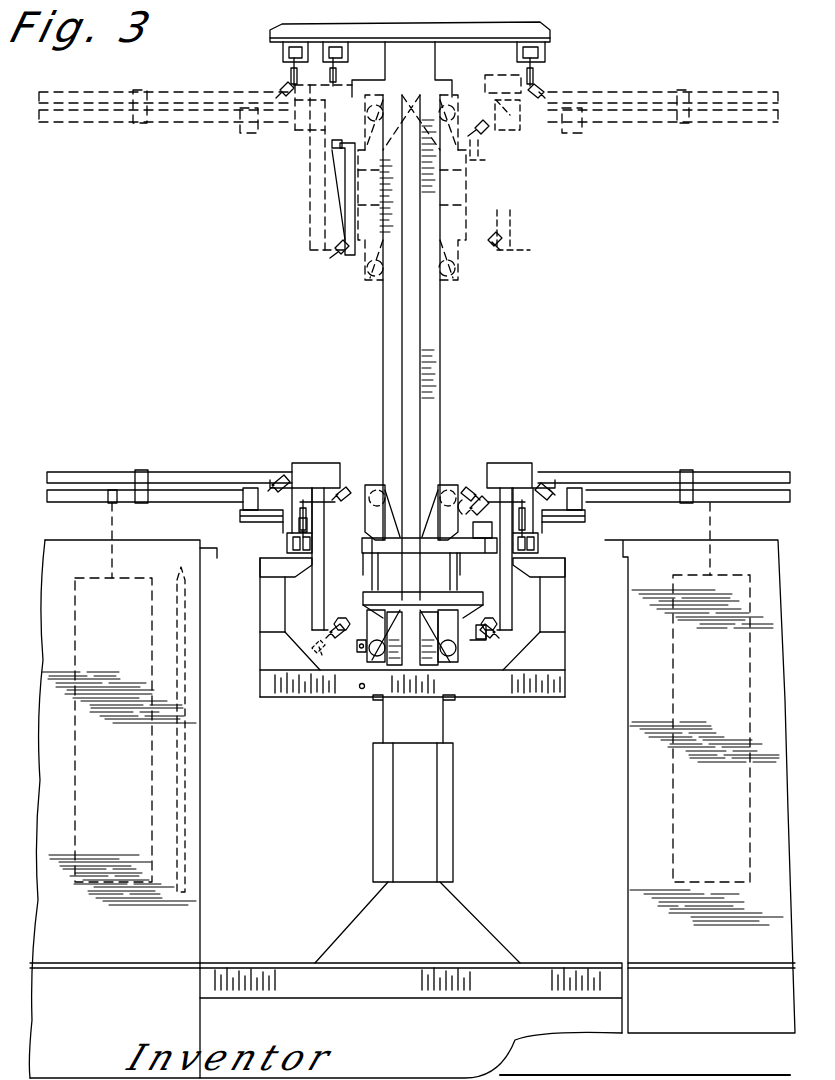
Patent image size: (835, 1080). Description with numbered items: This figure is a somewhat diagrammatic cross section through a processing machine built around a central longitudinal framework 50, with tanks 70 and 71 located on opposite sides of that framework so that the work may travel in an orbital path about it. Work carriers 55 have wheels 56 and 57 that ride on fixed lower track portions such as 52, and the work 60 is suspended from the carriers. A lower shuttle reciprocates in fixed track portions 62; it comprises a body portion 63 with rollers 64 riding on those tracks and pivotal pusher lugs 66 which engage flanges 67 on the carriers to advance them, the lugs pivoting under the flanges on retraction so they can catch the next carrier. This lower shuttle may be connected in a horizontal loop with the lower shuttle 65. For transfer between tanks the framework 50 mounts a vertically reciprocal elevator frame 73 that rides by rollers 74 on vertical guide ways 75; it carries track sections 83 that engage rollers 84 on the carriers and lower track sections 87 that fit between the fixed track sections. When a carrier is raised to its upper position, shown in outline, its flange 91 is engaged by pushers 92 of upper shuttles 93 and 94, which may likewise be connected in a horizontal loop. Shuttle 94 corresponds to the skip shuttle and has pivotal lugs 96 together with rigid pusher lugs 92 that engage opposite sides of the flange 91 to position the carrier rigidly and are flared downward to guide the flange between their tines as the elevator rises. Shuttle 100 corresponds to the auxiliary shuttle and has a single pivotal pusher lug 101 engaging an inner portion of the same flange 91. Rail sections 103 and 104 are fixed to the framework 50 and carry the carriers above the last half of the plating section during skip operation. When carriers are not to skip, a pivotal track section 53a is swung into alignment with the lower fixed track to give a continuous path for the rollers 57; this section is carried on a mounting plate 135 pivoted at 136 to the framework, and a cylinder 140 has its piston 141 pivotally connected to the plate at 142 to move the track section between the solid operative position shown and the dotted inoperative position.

The framework 50 is at (553, 31).
The upper shuttle 94 is at (285, 52).
The pivotal lugs 96 is at (286, 84).
The shuttle 100 is at (346, 55).
The upper shuttle 93 is at (540, 55).
The rigid pusher lugs 92 is at (540, 86).
The flanges 91 is at (494, 76).
The pivotal pusher lug 101 is at (322, 105).
The fixed track 103 is at (335, 148).
The fixed track 104 is at (335, 248).
The elevator frame 73 is at (468, 274).
The flanges 67 is at (525, 132).
The work carriers 55 is at (638, 91).
The vertical guide ways 75 is at (443, 330).
The fixed lower track portion 52 is at (258, 488).
The wheels 56 is at (278, 480).
The pivotal pusher lugs 66 is at (306, 505).
The body portion 63 is at (308, 530).
The fixed track portions 62 is at (290, 548).
The rollers 64 is at (310, 550).
The lower shuttle 65 is at (538, 547).
The rollers 74 is at (412, 534).
The rollers 84 is at (358, 498).
The track sections 83 is at (476, 508).
The mounting plate 135 is at (356, 668).
The pivot 136 is at (362, 689).
The pivotal track section 53a is at (363, 628).
The wheels 57 is at (341, 618).
The pivotal connection 142 is at (373, 625).
The cylinder 140 is at (405, 648).
The piston 141 is at (357, 645).
The lower track sections 87 is at (488, 642).
The tank 70 is at (190, 858).
The work 60 is at (155, 762).
The tank 71 is at (642, 797).